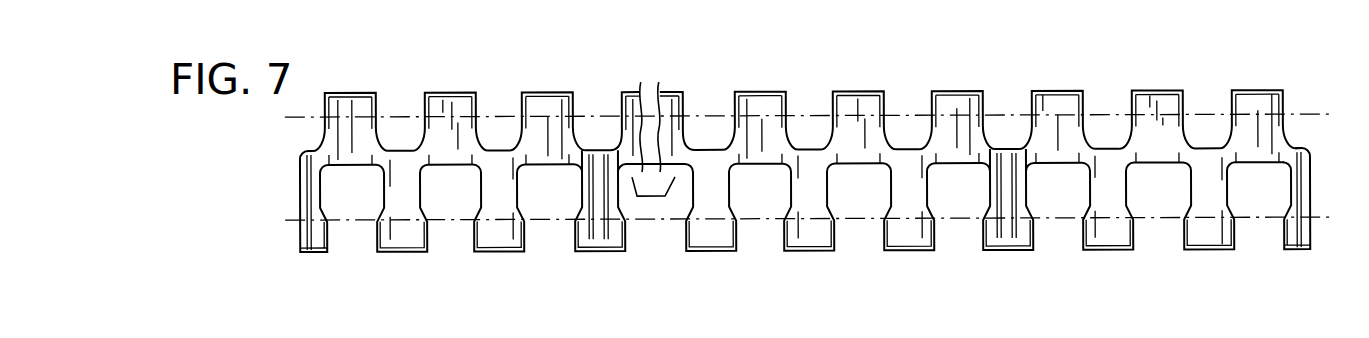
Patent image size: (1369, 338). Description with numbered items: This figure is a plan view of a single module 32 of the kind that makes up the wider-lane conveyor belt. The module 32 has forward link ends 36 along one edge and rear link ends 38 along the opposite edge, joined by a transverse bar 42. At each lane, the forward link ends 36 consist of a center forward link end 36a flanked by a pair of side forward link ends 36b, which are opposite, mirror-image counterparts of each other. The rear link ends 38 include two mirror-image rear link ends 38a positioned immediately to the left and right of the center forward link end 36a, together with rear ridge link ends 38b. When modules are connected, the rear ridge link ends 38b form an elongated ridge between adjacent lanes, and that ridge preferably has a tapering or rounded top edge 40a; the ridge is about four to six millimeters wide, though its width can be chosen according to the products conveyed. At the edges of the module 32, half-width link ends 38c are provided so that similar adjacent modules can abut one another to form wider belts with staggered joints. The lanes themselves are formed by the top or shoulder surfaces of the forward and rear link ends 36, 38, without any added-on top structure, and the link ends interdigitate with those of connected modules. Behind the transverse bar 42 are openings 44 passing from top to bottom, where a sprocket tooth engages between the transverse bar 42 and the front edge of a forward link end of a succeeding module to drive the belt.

The module 32 is at (1290, 56).
The forward link ends 36 is at (664, 70).
The center forward link end 36a is at (860, 90).
The side forward link ends 36b is at (763, 90).
The rear link ends 38 is at (1150, 289).
The mirror-image rear link ends 38a is at (817, 252).
The rear ridge link ends 38b is at (710, 252).
The edge link ends 38c is at (312, 252).
The tapering or rounded top edge 40a is at (712, 193).
The transverse bar 42 is at (407, 151).
The openings 44 is at (447, 192).